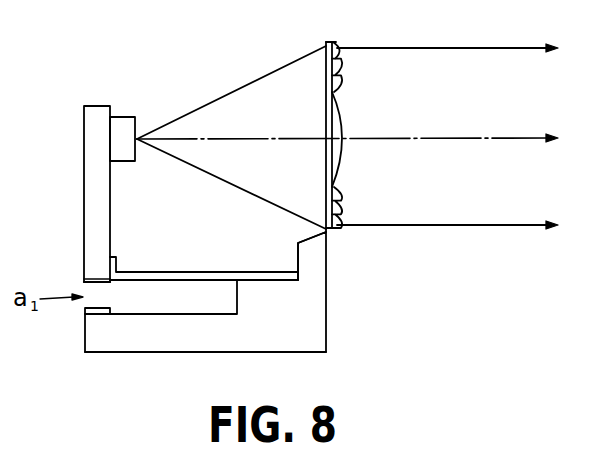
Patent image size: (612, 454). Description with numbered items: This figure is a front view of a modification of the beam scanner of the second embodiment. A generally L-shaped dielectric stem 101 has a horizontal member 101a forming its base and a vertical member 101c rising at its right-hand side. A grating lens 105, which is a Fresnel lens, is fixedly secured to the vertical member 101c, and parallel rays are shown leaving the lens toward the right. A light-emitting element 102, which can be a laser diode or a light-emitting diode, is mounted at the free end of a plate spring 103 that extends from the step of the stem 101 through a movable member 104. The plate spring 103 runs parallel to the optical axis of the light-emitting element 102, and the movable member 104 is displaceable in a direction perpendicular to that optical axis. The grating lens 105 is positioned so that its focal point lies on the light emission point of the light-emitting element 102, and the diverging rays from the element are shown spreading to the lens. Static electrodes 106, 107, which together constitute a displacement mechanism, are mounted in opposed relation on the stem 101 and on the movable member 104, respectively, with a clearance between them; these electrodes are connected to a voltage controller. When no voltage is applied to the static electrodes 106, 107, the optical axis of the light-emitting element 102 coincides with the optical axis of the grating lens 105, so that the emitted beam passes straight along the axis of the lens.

The stem 101 is at (317, 328).
The horizontal member 101a is at (140, 327).
The vertical member 101c is at (312, 256).
The light-emitting element 102 is at (121, 117).
The plate spring 103 is at (169, 272).
The movable member 104 is at (90, 181).
The grating lens 105 is at (328, 43).
The static electrode 106 is at (85, 306).
The static electrode 107 is at (84, 283).